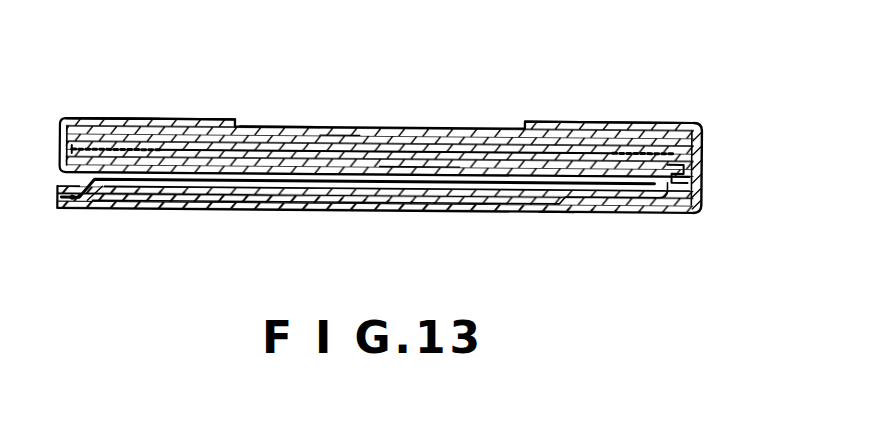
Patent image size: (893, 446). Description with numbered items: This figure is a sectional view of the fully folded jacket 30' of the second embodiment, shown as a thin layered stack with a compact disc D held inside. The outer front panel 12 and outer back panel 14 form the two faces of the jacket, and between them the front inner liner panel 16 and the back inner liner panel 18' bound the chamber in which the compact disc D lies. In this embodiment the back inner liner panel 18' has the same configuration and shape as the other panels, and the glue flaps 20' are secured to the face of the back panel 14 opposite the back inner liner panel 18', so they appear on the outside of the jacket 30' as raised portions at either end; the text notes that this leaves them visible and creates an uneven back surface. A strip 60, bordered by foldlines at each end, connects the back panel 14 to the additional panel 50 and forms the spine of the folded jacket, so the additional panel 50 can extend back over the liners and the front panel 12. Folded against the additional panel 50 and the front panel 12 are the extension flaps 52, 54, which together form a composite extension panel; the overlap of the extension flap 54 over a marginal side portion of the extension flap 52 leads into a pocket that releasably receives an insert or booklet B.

The fully folded jacket 30' is at (377, 93).
The glue flaps 20' is at (380, 94).
The compact disc D is at (135, 117).
The front inner liner panel 16 is at (303, 128).
The back panel 14 is at (337, 128).
The front panel 12 is at (376, 128).
The back inner liner panel 18' is at (431, 118).
The strip 60 is at (704, 176).
The additional panel 50 is at (590, 212).
The extension flap 54 is at (306, 180).
The extension flap 52 is at (473, 210).
The booklet B is at (556, 200).